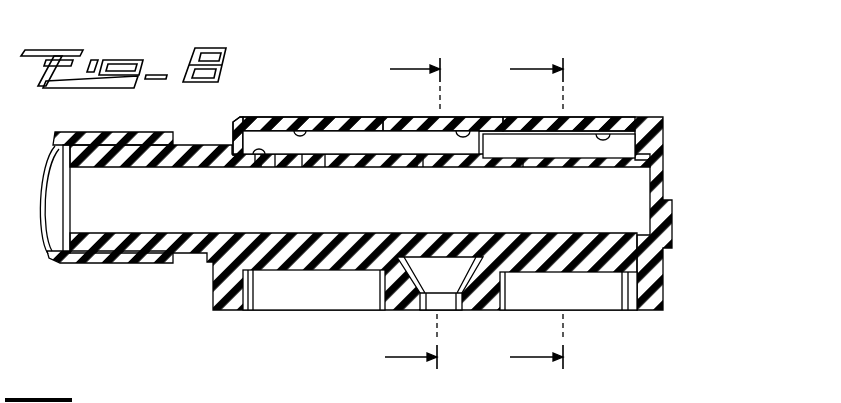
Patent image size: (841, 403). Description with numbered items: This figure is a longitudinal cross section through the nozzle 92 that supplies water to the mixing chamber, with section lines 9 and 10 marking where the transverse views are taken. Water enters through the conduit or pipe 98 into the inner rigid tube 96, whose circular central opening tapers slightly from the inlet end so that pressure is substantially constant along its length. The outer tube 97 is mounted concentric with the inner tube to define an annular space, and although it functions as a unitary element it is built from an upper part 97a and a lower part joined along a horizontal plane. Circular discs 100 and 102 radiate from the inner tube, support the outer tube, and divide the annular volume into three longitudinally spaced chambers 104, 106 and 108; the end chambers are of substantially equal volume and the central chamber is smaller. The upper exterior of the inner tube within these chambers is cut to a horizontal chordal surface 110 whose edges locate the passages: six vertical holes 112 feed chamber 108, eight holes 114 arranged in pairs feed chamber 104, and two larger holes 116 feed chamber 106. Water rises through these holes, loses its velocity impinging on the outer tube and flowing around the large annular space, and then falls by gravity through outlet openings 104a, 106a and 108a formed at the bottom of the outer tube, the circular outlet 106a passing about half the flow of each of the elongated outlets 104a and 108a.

The nozzle 92 is at (273, 103).
The inner rigid tube 96 is at (188, 146).
The outer tube 97 is at (641, 117).
The upper part 97a is at (232, 117).
The conduit or pipe 98 is at (62, 135).
The circular disc 100 is at (382, 139).
The circular disc 102 is at (491, 140).
The chamber 104 is at (306, 120).
The outlet opening 104a is at (252, 310).
The chamber 106 is at (474, 118).
The outlet opening 106a is at (426, 306).
The chamber 108 is at (596, 127).
The outlet opening 108a is at (621, 311).
The horizontal surface 110 is at (257, 167).
The holes 112 is at (546, 168).
The holes 114 is at (314, 168).
The holes 116 is at (421, 168).
The section line 9- 9 is at (412, 215).
The section line 10- 10 is at (536, 215).